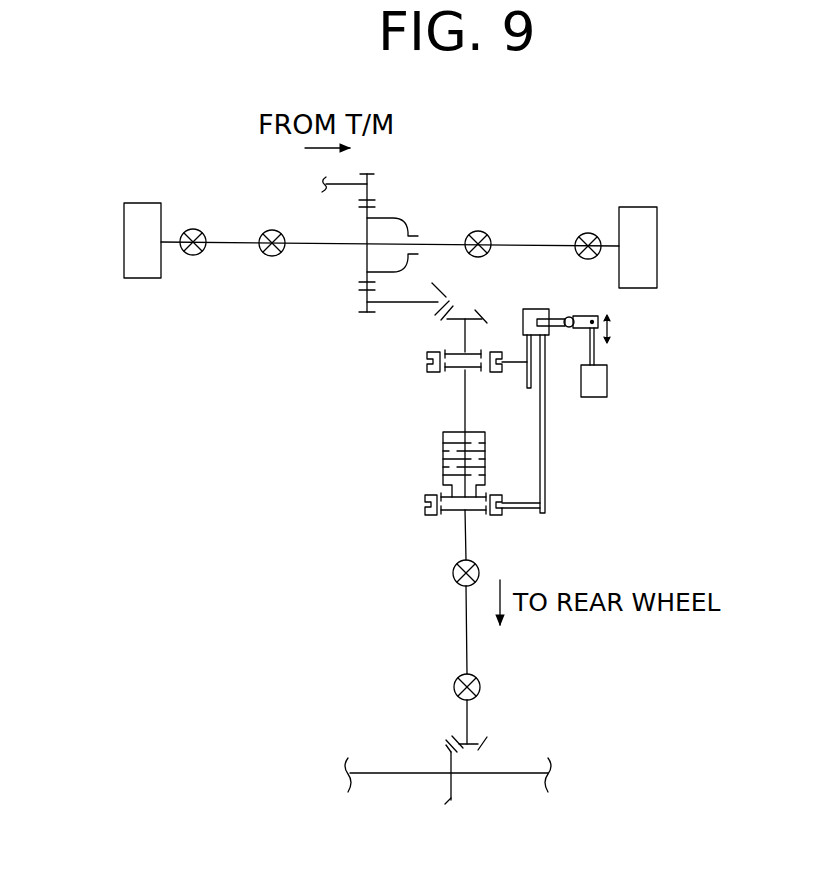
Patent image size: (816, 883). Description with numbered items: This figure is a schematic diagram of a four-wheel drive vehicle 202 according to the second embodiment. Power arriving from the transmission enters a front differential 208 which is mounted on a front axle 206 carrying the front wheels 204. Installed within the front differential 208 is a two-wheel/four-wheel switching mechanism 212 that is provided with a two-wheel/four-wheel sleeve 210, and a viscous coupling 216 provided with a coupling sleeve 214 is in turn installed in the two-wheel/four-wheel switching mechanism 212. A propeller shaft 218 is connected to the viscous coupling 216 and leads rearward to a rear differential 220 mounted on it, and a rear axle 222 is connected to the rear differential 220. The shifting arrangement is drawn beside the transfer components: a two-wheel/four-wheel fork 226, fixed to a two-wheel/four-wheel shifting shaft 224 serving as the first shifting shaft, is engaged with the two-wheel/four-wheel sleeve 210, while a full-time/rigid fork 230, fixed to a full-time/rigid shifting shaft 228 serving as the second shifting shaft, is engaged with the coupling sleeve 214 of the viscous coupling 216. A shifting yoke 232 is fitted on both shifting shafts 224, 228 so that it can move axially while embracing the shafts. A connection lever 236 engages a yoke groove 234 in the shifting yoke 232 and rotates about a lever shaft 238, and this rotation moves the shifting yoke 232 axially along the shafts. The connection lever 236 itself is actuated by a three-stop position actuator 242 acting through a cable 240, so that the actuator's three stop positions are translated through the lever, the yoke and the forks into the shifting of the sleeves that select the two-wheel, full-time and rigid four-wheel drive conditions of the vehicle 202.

The four-wheel drive vehicle 202 is at (565, 150).
The front wheels 204 is at (143, 256).
The front axle 206 is at (230, 242).
The front differential 208 is at (415, 193).
The two-wheel/four-wheel sleeve 210 is at (426, 372).
The two-wheel/four-wheel switching mechanism 212 is at (428, 400).
The coupling sleeve 214 is at (430, 522).
The viscous coupling 216 is at (422, 472).
The propeller shaft 218 is at (465, 640).
The rear differential 220 is at (502, 737).
The rear axle 222 is at (512, 775).
The two-wheel/four-wheel shifting shaft 224 is at (527, 350).
The two-wheel/four-wheel fork 226 is at (515, 372).
The full-time/rigid shifting shaft 228 is at (545, 470).
The full-time/rigid fork 230 is at (531, 512).
The shifting yoke 232 is at (550, 311).
The yoke groove 234 is at (555, 327).
The connection lever 236 is at (580, 314).
The lever shaft 238 is at (578, 332).
The cable 240 is at (612, 341).
The three-stop position actuator 242 is at (600, 384).